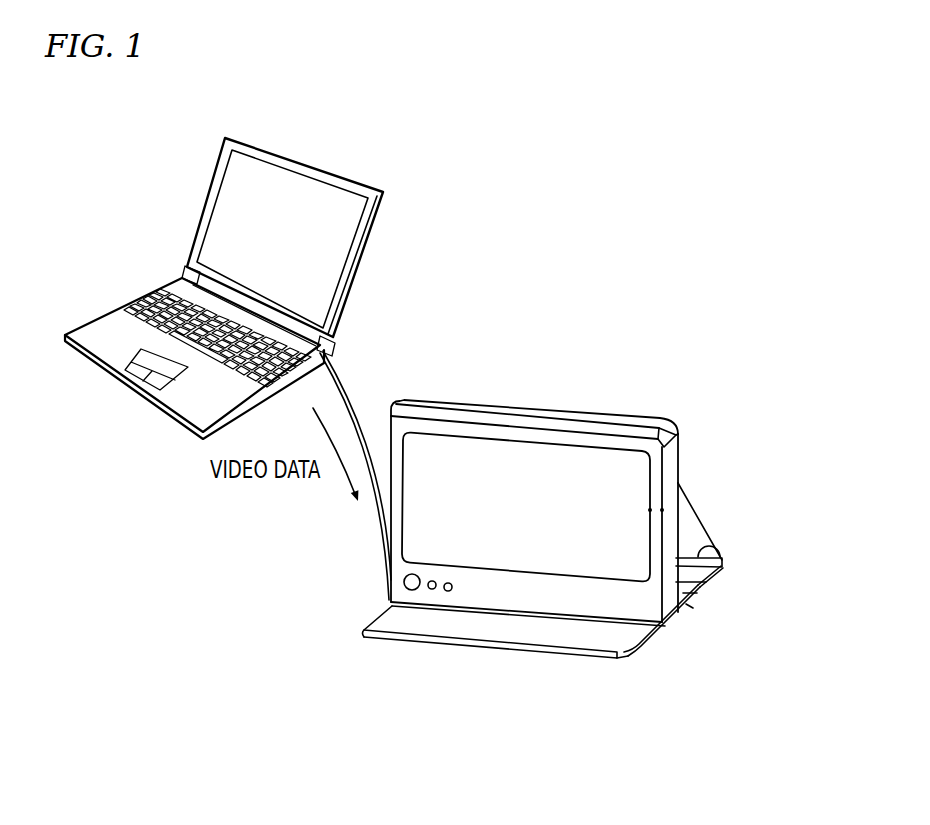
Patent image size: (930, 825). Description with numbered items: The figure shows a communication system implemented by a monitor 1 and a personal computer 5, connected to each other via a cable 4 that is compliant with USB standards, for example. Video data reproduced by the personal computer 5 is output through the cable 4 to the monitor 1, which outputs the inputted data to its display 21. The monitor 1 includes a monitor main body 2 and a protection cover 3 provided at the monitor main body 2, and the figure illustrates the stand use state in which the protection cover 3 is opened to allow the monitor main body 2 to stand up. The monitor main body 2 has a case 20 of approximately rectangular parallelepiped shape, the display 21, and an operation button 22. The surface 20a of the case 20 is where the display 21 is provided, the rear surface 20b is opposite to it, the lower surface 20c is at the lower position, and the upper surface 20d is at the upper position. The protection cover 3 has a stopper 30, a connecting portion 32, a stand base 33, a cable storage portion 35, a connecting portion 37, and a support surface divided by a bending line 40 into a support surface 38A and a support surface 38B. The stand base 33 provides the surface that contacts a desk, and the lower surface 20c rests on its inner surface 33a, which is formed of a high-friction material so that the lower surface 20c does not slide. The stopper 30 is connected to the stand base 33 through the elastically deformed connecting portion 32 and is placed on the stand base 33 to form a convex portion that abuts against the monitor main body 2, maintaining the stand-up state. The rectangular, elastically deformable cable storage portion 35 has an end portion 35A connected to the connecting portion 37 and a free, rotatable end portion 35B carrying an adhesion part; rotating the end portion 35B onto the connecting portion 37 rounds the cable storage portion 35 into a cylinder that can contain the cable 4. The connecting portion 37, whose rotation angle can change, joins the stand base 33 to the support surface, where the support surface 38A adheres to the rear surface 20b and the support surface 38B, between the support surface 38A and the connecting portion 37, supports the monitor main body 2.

The monitor 1 is at (534, 422).
The monitor main body 2 is at (567, 486).
The protection cover 3 is at (524, 394).
The cable 4 is at (355, 475).
The personal computer 5 is at (224, 246).
The case 20 is at (605, 431).
The surface 20a is at (736, 638).
The rear surface 20b is at (733, 516).
The lower surface 20c is at (479, 603).
The upper surface 20d is at (527, 389).
The display 21 is at (526, 465).
The operation button 22 is at (380, 561).
The stopper 30 is at (350, 625).
The connecting portion 32 is at (514, 662).
The stand base 33 is at (662, 652).
The inner surface 33a is at (742, 607).
The cable storage portion 35 is at (726, 588).
The end portion 35A is at (743, 541).
The end portion 35B is at (736, 609).
The connecting portion 37 is at (726, 566).
The support surface 38A is at (732, 437).
The support surface 38B is at (733, 547).
The bending line 40 is at (727, 458).